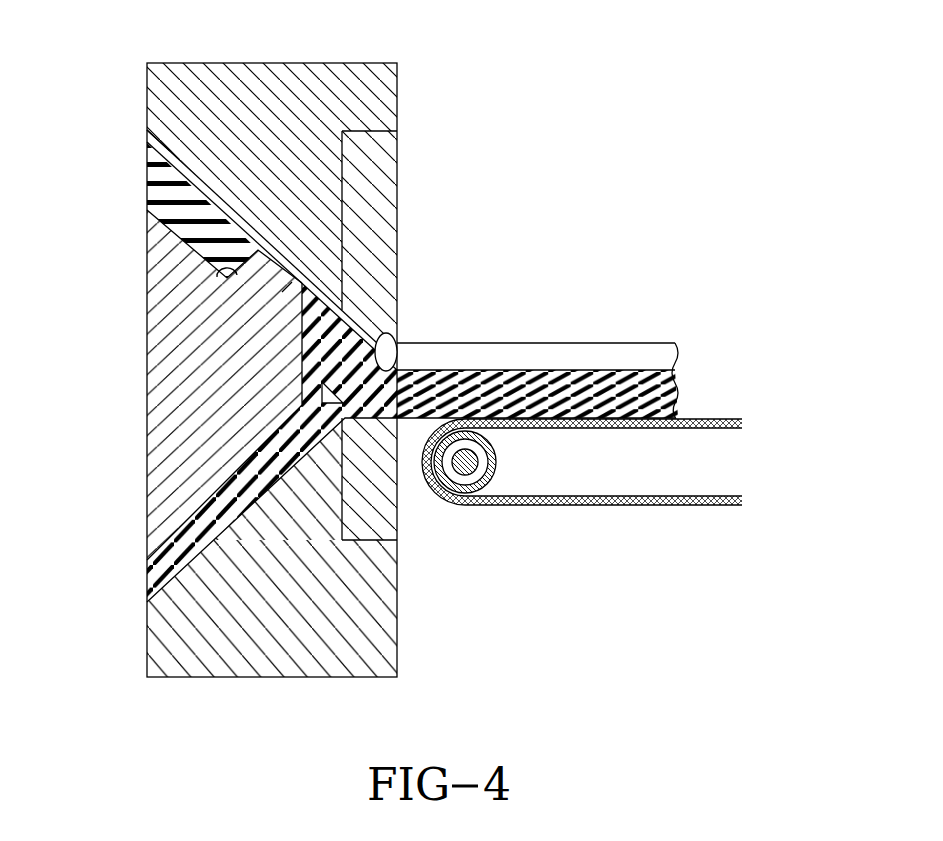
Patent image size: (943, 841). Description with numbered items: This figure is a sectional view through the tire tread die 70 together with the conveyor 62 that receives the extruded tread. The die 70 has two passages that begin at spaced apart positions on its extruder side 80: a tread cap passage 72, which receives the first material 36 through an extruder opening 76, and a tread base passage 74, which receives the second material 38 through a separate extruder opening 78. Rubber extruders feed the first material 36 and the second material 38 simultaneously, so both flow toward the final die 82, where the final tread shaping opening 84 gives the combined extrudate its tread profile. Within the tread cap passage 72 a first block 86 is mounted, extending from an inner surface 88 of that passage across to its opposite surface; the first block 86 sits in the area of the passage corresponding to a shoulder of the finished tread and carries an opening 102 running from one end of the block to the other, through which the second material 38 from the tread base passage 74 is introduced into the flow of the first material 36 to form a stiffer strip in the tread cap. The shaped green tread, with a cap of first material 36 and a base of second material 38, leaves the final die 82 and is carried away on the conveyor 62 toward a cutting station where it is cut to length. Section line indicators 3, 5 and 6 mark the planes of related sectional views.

The tire tread die 70 is at (287, 78).
The final die 82 is at (368, 160).
The first material 36 is at (148, 160).
The extruder opening 76 is at (150, 140).
The tread cap passage 72 is at (150, 208).
The extruder side 80 is at (152, 300).
The inner surface 88 is at (228, 278).
The second material 38 is at (148, 570).
The tread base passage 74 is at (152, 545).
The extruder opening 78 is at (148, 600).
The opening 102 is at (322, 363).
The final tread shaping opening 84 is at (393, 334).
The first block 86 is at (282, 292).
The conveyor 62 is at (712, 420).
The section line 3- 3 is at (340, 186).
The section line 6- 6 is at (262, 263).
The section line 5- 5 is at (772, 422).